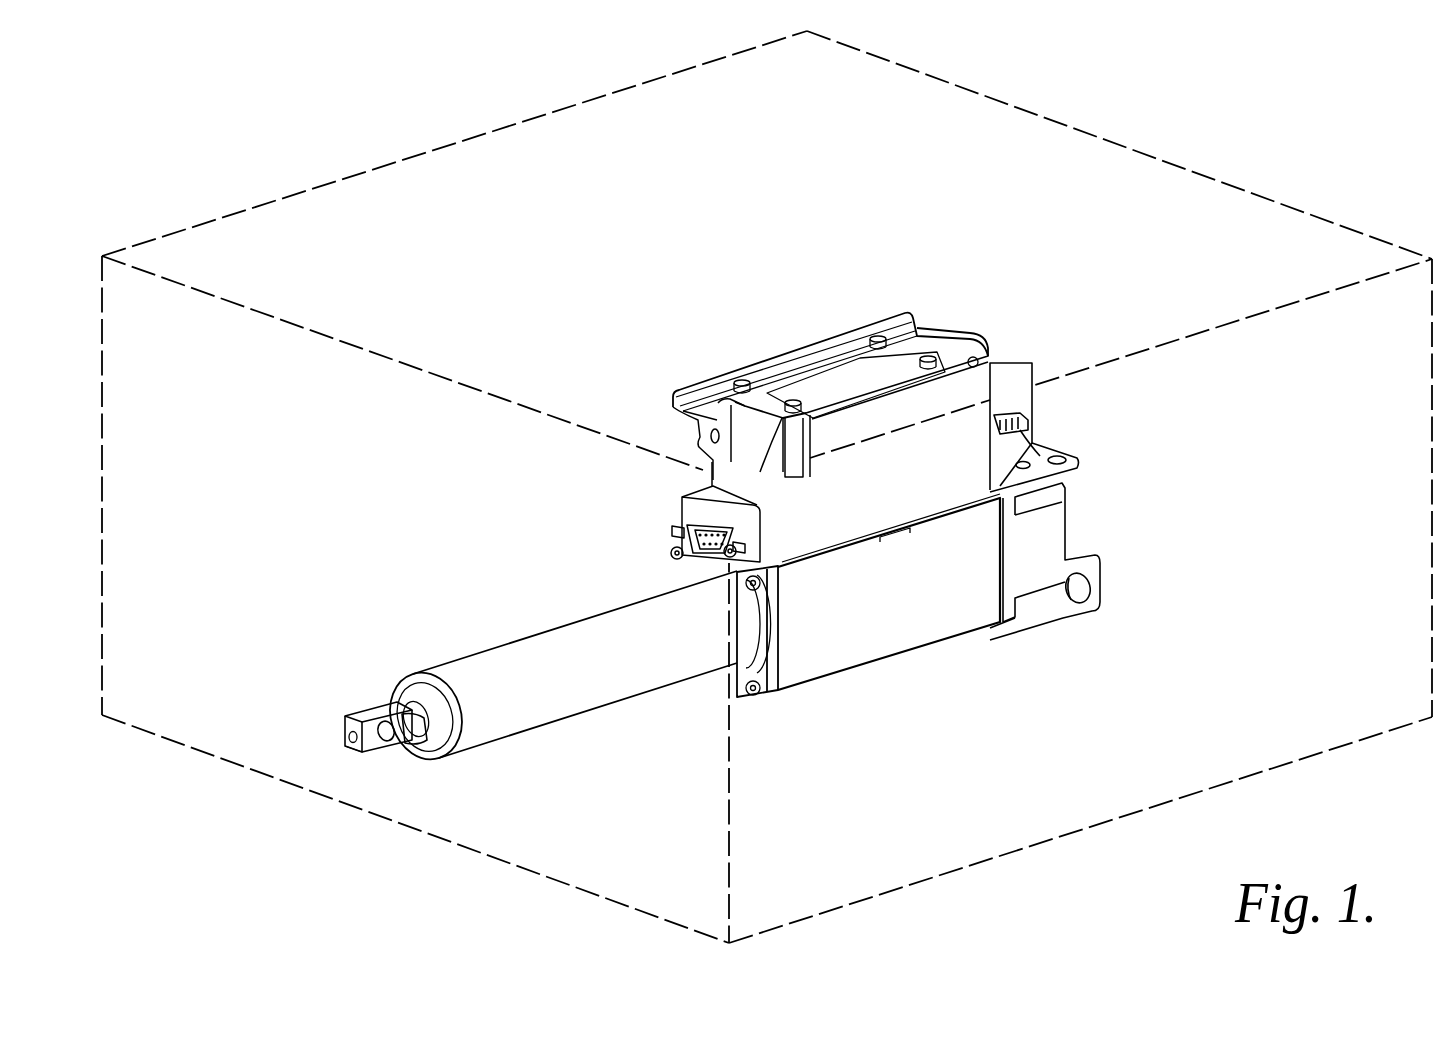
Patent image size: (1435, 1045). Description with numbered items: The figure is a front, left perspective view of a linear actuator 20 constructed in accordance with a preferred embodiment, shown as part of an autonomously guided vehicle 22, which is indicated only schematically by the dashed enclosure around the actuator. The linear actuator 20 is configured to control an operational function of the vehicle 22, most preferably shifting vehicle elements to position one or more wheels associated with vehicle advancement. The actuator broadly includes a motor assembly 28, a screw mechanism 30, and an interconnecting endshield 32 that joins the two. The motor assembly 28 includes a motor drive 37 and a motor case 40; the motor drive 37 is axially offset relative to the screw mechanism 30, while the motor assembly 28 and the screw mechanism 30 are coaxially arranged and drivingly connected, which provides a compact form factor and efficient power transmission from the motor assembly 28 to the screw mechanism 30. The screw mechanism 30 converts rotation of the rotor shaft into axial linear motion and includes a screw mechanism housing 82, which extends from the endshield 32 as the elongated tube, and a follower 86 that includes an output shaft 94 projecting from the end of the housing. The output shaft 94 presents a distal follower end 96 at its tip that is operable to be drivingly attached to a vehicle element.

The linear actuator 20 is at (830, 385).
The autonomously guided vehicle 22 is at (1212, 130).
The motor assembly 28 is at (950, 628).
The screw mechanism 30 is at (557, 703).
The interconnecting endshield 32 is at (757, 663).
The motor drive 37 is at (958, 397).
The motor case 40 is at (883, 650).
The screw mechanism housing 82 is at (617, 625).
The follower 86 is at (375, 712).
The output shaft 94 is at (356, 750).
The distal follower end 96 is at (345, 738).